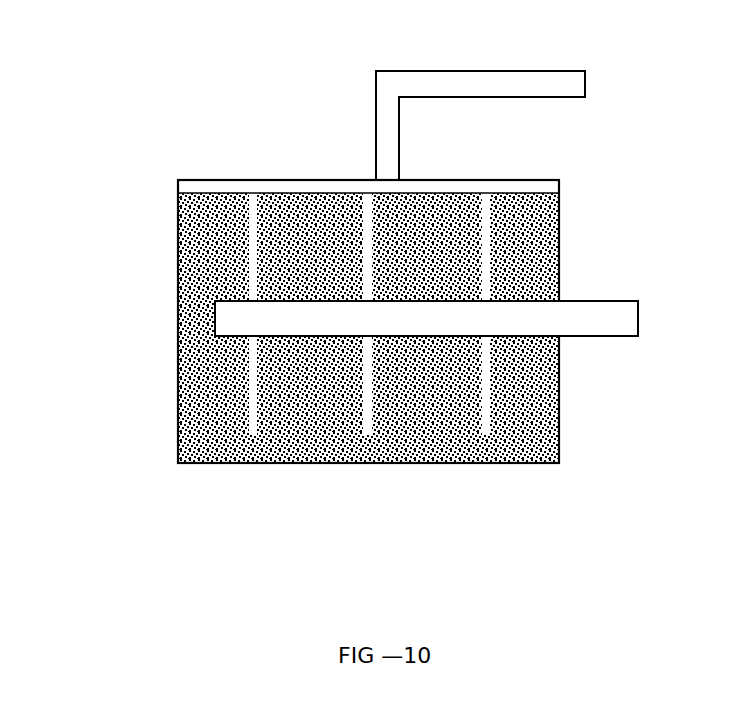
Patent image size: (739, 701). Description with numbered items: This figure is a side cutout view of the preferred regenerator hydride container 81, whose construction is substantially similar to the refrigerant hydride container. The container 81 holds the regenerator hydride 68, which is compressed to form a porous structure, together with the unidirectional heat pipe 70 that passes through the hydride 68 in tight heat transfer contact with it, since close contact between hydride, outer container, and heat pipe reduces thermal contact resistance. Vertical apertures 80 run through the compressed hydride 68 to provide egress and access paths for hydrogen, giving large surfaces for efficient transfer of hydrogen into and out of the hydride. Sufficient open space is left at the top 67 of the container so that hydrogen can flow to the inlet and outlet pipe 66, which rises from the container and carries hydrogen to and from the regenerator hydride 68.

The inlet and outlet pipe 66 is at (455, 78).
The top of container 67 is at (535, 187).
The regenerator hydride 68 is at (548, 428).
The unidirectional heat pipe 70 is at (593, 313).
The apertures 80 is at (251, 200).
The regenerator hydride container 81 is at (353, 472).